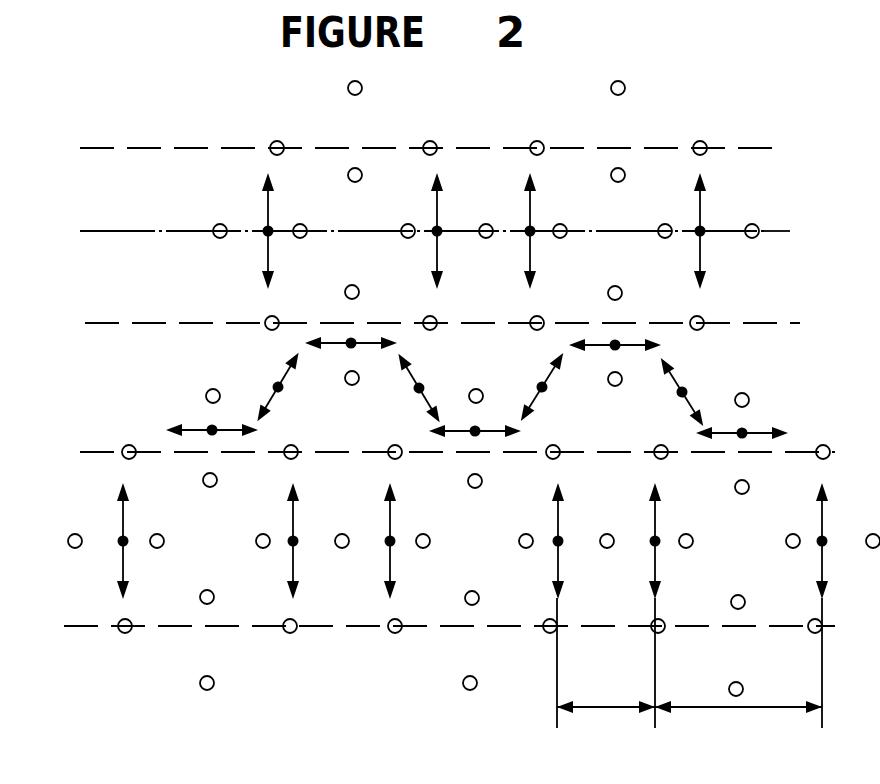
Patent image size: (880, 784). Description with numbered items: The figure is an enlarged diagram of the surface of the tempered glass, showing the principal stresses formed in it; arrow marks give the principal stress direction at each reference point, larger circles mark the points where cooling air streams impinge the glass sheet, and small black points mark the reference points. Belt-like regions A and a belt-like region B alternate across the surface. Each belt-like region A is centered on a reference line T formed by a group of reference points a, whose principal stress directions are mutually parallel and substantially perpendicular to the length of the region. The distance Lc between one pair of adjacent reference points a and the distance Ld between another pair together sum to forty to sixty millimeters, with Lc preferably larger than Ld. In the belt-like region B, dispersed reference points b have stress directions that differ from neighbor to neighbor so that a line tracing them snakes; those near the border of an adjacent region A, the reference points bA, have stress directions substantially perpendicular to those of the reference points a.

The reference points a is at (268, 231).
The reference points b is at (277, 386).
The reference points bA is at (351, 343).
The belt-like regions A is at (96, 267).
The belt-like region B is at (108, 382).
The reference line T is at (770, 231).
The distance Ld is at (606, 669).
The distance Lc is at (738, 669).